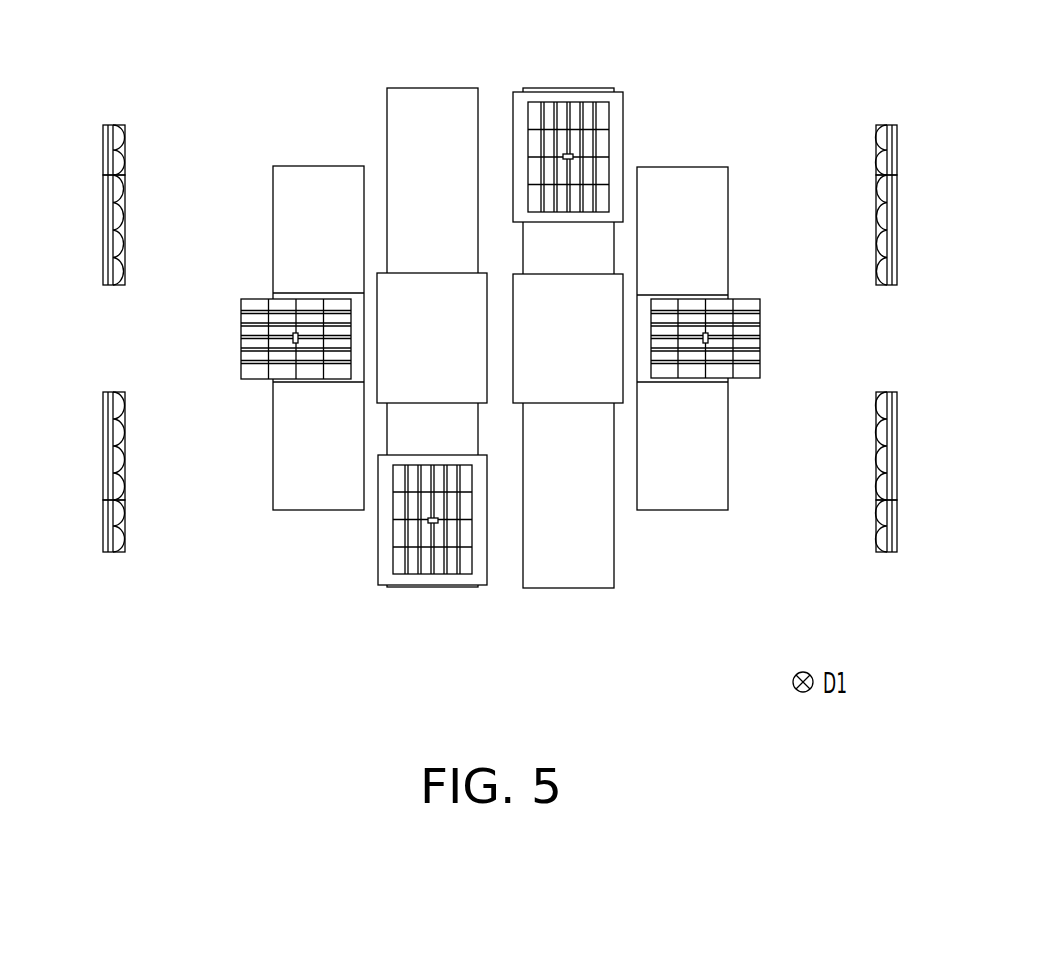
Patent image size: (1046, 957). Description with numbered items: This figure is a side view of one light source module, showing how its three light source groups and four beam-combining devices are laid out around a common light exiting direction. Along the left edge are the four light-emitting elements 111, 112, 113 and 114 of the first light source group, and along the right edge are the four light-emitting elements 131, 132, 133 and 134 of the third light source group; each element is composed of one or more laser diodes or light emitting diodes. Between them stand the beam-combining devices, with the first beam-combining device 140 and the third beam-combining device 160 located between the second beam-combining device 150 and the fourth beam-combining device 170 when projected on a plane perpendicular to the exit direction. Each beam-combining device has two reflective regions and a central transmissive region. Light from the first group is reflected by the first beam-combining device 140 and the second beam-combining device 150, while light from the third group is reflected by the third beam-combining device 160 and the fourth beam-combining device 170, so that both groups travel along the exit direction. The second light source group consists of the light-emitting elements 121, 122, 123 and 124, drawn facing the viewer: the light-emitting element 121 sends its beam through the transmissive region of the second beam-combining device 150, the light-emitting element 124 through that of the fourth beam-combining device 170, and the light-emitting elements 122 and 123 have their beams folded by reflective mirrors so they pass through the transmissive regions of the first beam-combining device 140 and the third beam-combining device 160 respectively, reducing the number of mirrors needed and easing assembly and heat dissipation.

The light-emitting element 111 is at (112, 152).
The light-emitting element 112 is at (112, 522).
The light-emitting element 113 is at (112, 232).
The light-emitting element 114 is at (112, 447).
The light-emitting element 121 is at (248, 329).
The light-emitting element 122 is at (396, 560).
The light-emitting element 123 is at (562, 108).
The light-emitting element 124 is at (762, 327).
The light-emitting element 131 is at (898, 147).
The light-emitting element 132 is at (898, 513).
The light-emitting element 133 is at (898, 223).
The light-emitting element 134 is at (898, 437).
The first beam-combining device 140 is at (434, 87).
The second beam-combining device 150 is at (318, 165).
The third beam-combining device 160 is at (614, 562).
The fourth beam-combining device 170 is at (728, 482).